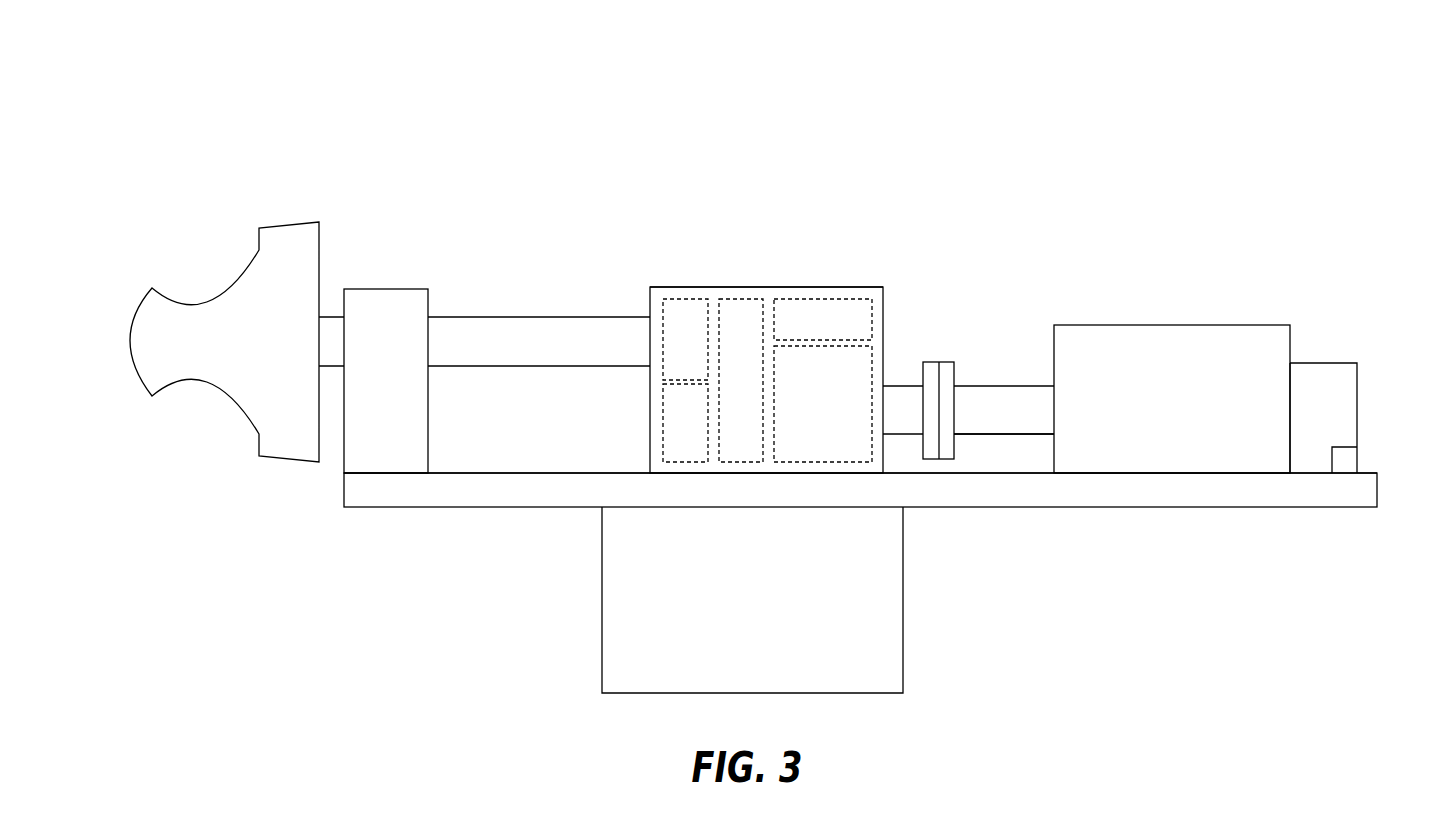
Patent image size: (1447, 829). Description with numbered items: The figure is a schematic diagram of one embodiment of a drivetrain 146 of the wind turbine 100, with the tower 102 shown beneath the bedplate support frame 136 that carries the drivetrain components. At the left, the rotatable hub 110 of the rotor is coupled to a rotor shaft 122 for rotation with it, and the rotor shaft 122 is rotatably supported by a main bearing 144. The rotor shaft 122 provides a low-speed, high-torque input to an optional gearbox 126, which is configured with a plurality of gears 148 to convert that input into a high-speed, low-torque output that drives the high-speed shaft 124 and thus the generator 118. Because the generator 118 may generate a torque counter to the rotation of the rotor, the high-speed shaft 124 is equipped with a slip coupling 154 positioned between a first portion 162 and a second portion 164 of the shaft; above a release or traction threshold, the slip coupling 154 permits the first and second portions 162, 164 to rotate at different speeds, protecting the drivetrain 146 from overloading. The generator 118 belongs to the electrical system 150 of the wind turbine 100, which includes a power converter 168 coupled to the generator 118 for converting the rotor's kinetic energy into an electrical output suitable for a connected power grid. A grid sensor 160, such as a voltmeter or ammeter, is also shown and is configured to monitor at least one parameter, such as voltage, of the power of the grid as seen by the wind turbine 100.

The wind turbine 100 is at (157, 89).
The tower 102 is at (890, 608).
The hub 110 is at (158, 337).
The generator 118 is at (1185, 337).
The rotor shaft 122 is at (553, 330).
The high-speed shaft 124 is at (1021, 393).
The gearbox 126 is at (713, 292).
The bedplate support frame 136 is at (1345, 500).
The main bearing 144 is at (396, 296).
The drivetrain 146 is at (803, 114).
The gears 148 is at (671, 357).
The electrical system 150 is at (1373, 328).
The slip coupling 154 is at (941, 354).
The grid sensor 160 is at (1343, 462).
The first portion of the high-speed shaft 162 is at (900, 397).
The second portion of the high-speed shaft 164 is at (998, 428).
The power converter 168 is at (1343, 392).